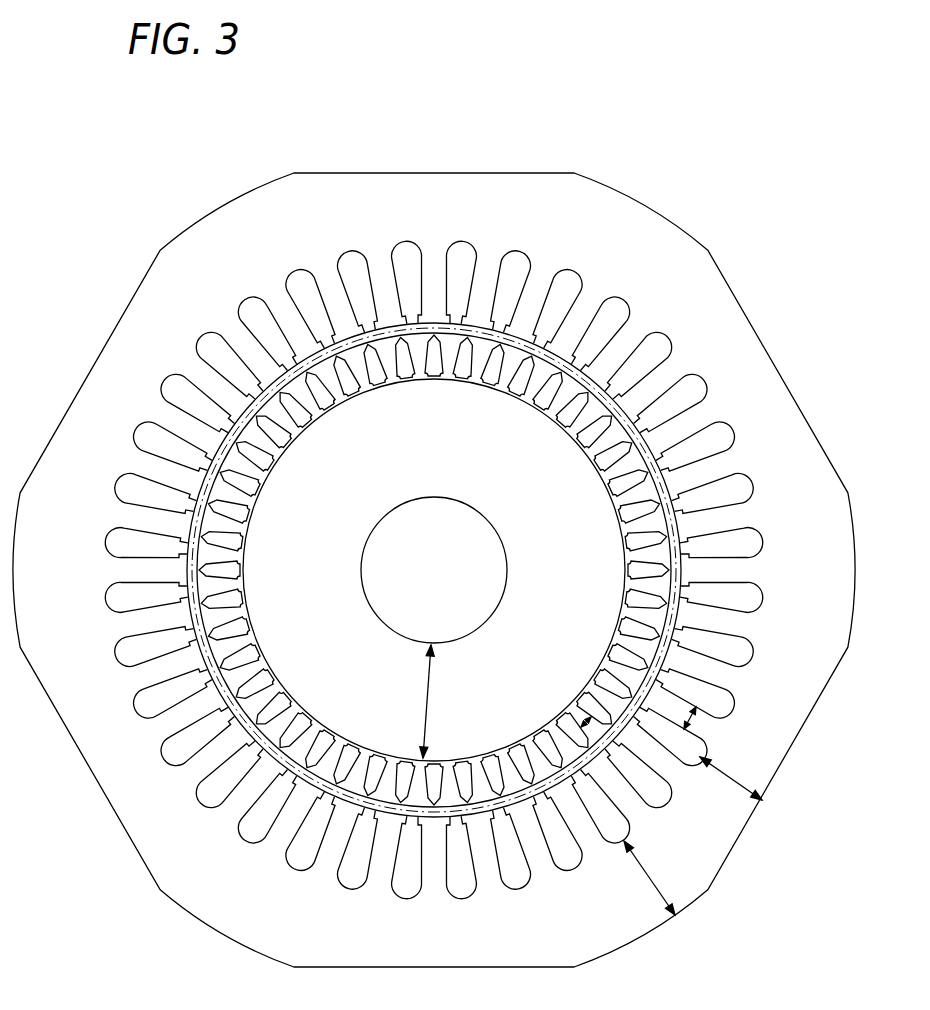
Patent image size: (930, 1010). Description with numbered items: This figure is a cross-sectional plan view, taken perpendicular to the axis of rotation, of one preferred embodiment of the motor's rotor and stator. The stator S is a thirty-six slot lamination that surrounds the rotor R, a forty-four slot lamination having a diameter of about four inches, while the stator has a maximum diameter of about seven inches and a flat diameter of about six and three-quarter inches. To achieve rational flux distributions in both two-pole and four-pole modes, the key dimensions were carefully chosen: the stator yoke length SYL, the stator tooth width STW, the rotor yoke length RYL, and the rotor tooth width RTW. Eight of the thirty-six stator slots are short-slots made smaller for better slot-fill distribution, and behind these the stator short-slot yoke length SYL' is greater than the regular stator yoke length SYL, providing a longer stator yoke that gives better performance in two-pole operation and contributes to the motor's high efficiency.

The stator S is at (118, 727).
The rotor R is at (310, 577).
The rotor yoke length RYL is at (427, 701).
The rotor tooth width RTW is at (580, 718).
The stator tooth width STW is at (696, 710).
The stator short-slot yoke length SYL' is at (722, 792).
The stator yoke length SYL is at (623, 882).